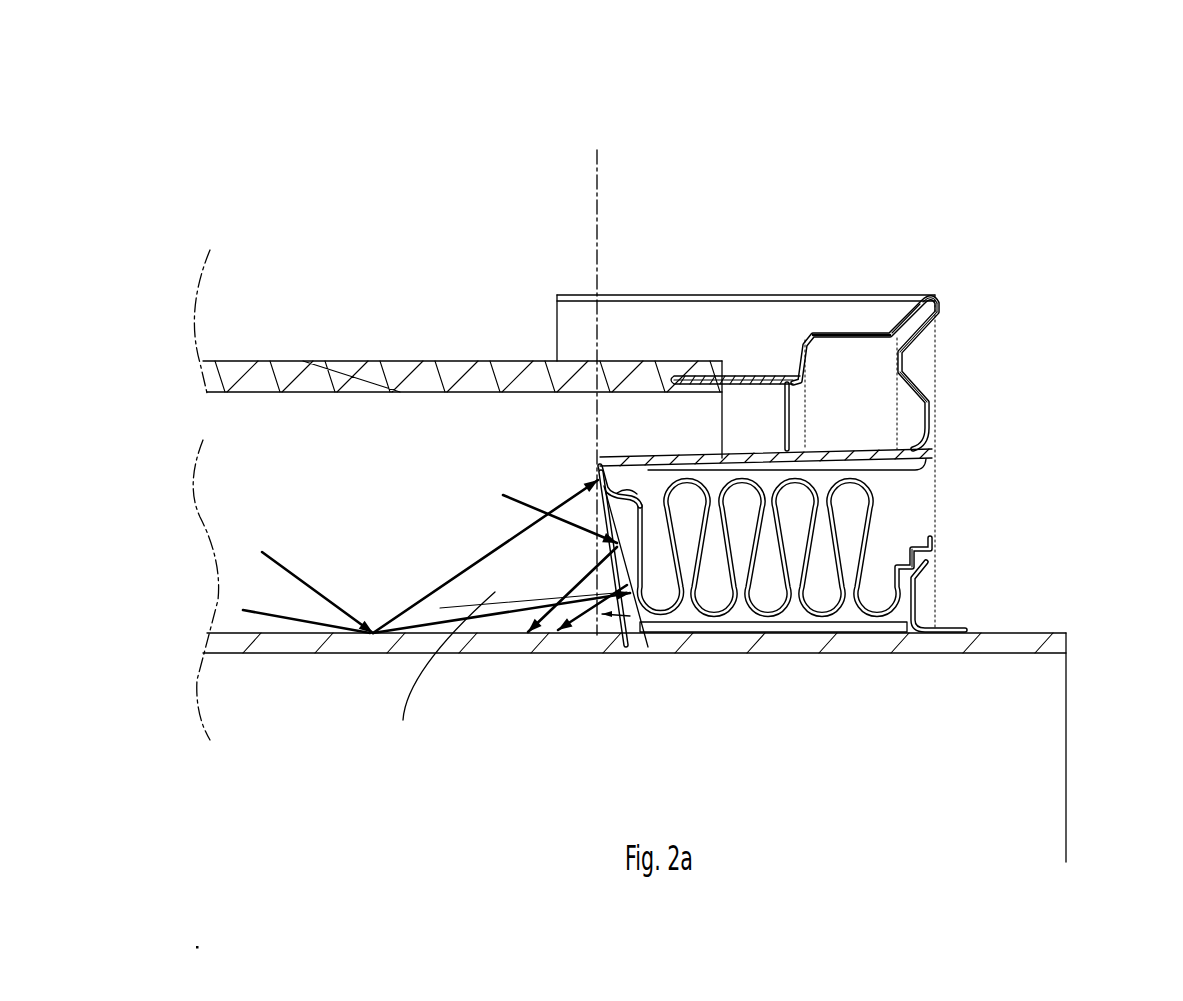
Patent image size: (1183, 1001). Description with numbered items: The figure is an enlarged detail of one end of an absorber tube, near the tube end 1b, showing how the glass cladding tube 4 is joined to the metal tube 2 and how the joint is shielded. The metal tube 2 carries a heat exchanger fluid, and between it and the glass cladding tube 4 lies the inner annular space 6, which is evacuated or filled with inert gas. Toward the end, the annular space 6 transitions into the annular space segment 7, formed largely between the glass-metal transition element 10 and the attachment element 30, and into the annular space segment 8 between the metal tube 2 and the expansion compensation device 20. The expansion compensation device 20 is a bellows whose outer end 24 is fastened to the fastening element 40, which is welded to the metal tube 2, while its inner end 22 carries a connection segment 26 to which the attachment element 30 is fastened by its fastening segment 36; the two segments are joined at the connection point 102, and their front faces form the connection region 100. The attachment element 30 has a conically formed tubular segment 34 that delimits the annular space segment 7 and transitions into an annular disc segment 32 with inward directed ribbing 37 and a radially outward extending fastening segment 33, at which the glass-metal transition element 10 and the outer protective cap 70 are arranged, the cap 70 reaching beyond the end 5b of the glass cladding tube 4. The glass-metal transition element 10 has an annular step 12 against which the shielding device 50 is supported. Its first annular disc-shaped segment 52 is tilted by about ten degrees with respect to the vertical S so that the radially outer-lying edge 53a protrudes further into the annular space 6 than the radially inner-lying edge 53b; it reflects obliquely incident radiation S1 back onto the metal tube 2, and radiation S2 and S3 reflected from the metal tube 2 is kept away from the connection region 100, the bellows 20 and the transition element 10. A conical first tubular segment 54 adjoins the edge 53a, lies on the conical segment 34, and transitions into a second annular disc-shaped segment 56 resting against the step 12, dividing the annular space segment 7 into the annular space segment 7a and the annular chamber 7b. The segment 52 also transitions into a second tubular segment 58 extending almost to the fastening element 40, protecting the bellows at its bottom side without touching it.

The tube end 1b is at (1010, 157).
The metal tube 2 is at (1033, 650).
The glass cladding tube 4 is at (262, 361).
The end of the glass cladding tube 5b is at (727, 370).
The inner annular space 6 is at (290, 494).
The annular space segment 7 is at (702, 445).
The annular space segment 7a is at (746, 328).
The annular chamber 7b is at (873, 435).
The annular space segment 8 is at (877, 632).
The glass-metal transition element 10 is at (770, 368).
The annular step 12 is at (803, 333).
The expansion compensation device 20 is at (870, 540).
The inner end 22 is at (560, 593).
The outer end 24 is at (913, 555).
The connection segment 26 is at (613, 558).
The attachment element 30 is at (940, 420).
The annular disc segment 32 is at (958, 360).
The fastening segment 33 is at (937, 305).
The tubular segment 34 is at (935, 460).
The fastening segment 36 is at (598, 472).
The ribbing 37 is at (932, 282).
The fastening element 40 is at (963, 628).
The shielding device 50 is at (437, 681).
The first annular disc-shaped segment 52 is at (575, 592).
The radially outer-lying edge 53a is at (600, 445).
The radially inner-lying edge 53b is at (643, 623).
The first tubular segment 54 is at (625, 430).
The second annular disc-shaped segment 56 is at (757, 378).
The second tubular segment 58 is at (810, 625).
The outer protective cap 70 is at (890, 331).
The connection region 100 is at (560, 470).
The connection point 102 is at (483, 464).
The vertical S is at (598, 178).
The obliquely incident radiation S1 is at (510, 500).
The radiation S2 is at (292, 560).
The radiation S3 is at (263, 607).